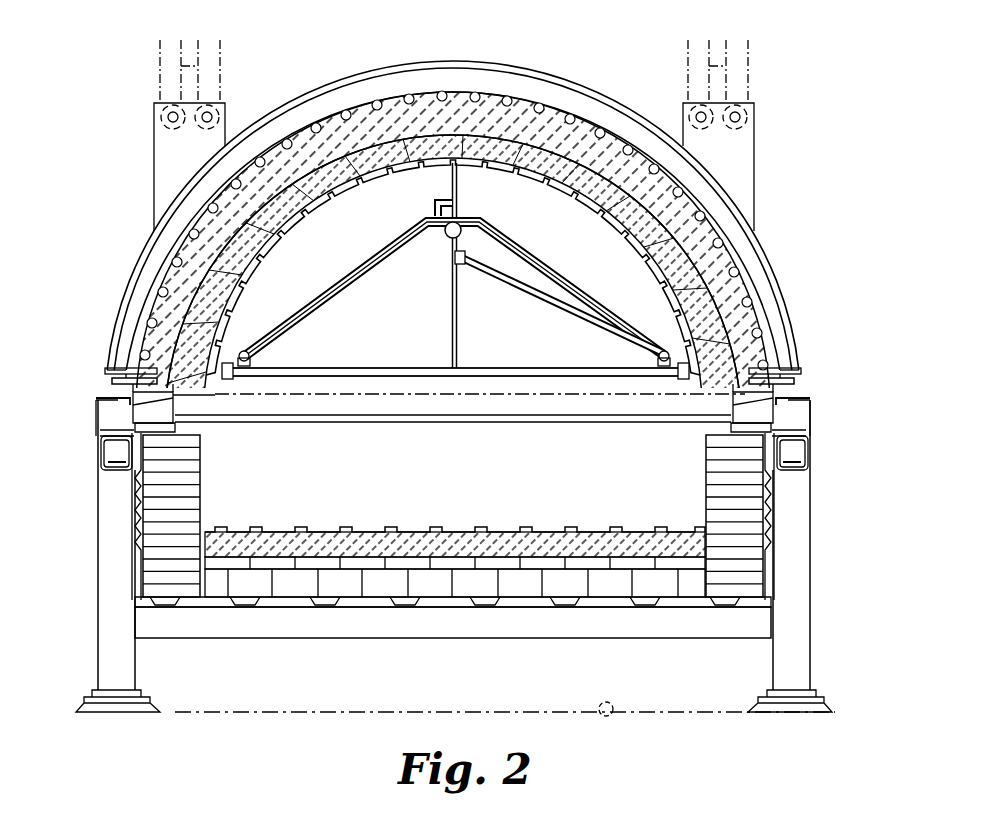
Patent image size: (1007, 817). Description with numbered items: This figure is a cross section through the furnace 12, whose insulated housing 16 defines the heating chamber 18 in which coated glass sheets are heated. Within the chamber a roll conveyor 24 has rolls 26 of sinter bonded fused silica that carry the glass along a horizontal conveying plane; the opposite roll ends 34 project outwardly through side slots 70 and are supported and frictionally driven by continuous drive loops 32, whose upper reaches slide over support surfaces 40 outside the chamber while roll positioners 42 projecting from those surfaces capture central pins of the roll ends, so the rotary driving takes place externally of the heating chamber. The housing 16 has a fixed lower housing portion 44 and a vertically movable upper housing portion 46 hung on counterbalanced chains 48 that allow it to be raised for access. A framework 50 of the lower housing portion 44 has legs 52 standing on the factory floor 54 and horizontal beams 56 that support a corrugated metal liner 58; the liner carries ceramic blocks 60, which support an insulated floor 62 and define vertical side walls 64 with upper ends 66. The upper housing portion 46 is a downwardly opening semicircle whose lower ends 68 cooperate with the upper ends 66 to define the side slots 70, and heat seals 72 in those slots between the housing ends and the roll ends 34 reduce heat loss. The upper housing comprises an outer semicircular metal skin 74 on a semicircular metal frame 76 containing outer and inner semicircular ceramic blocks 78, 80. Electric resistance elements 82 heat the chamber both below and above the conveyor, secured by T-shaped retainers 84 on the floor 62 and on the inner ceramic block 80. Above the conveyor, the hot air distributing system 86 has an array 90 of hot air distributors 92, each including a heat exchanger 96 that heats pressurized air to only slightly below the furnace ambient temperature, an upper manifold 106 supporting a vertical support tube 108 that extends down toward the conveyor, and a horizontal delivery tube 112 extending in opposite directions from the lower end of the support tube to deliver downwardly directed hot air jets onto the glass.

The furnace 12 is at (790, 150).
The insulated housing 16 is at (337, 66).
The heating chamber 18 is at (333, 186).
The roll conveyor 24 is at (352, 395).
The rolls 26 is at (490, 405).
The continuous drive loops 32 is at (110, 415).
The roll ends 34 is at (100, 400).
The support surface 40 is at (100, 455).
The roll positioners 42 is at (110, 433).
The lower housing portion 44 is at (814, 556).
The upper housing portion 46 is at (775, 262).
The counterbalanced chains 48 is at (157, 87).
The framework 50 is at (814, 586).
The legs 52 is at (98, 588).
The factory floor 54 is at (610, 716).
The horizontal beams 56 is at (548, 640).
The corrugated metal liner 58 is at (308, 560).
The ceramic blocks 60 is at (292, 565).
The insulated floor 62 is at (372, 585).
The vertical side walls 64 is at (203, 455).
The upper ends of side walls 66 is at (200, 430).
The lower ends of upper housing 68 is at (108, 370).
The side slots 70 is at (150, 405).
The heat seals 72 is at (112, 372).
The outer semicircular metal skin 74 is at (487, 62).
The semicircular metal frame 76 is at (438, 86).
The outer semicircular ceramic block 78 is at (388, 118).
The inner semicircular ceramic block 80 is at (556, 212).
The electric resistance elements 82 is at (265, 250).
The T-shaped retainers 84 is at (287, 225).
The hot air distributing system 86 is at (553, 152).
The array of hot air distributors 90 is at (622, 305).
The hot air distributor 92 is at (287, 306).
The heat exchanger 96 is at (412, 232).
The upper manifold 106 is at (462, 232).
The vertical support tube 108 is at (451, 310).
The horizontal delivery tube 112 is at (504, 368).